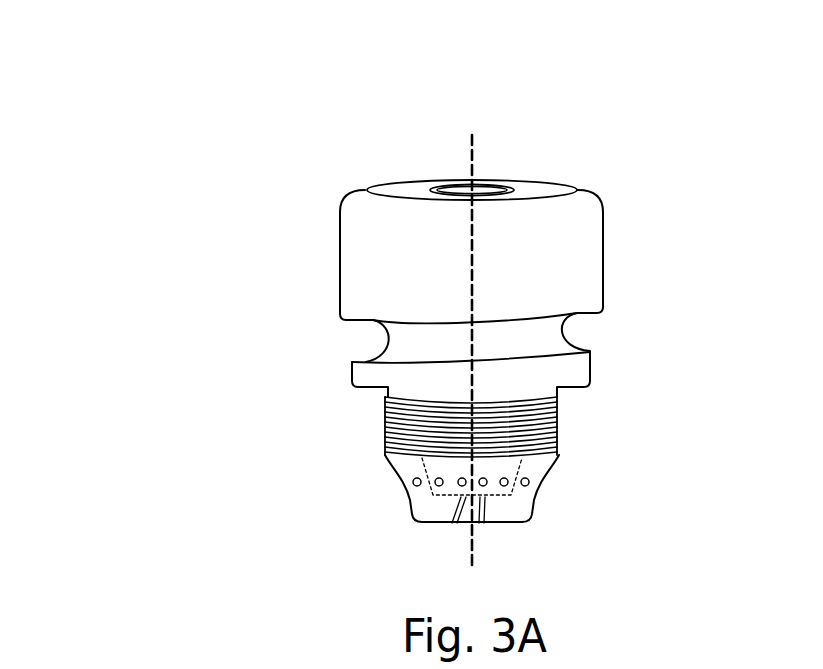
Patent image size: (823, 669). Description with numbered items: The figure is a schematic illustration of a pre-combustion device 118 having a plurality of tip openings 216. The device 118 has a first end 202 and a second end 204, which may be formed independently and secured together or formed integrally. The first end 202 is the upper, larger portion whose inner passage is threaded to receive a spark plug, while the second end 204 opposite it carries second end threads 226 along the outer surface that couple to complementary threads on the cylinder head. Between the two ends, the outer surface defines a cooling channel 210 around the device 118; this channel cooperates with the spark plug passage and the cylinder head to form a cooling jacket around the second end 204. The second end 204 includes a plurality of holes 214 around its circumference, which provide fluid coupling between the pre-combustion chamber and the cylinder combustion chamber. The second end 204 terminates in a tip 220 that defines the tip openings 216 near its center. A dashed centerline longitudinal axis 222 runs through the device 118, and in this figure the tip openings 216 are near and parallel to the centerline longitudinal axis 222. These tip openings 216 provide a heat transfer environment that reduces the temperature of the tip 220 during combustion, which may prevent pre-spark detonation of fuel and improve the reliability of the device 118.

The pre-combustion device 118 is at (95, 83).
The first end 202 is at (587, 95).
The second end 204 is at (572, 540).
The cooling channel 210 is at (590, 330).
The holes 214 is at (540, 481).
The tip openings 216 is at (450, 521).
The tip 220 is at (412, 518).
The centerline longitudinal axis 222 is at (470, 135).
The second end threads 226 is at (553, 440).